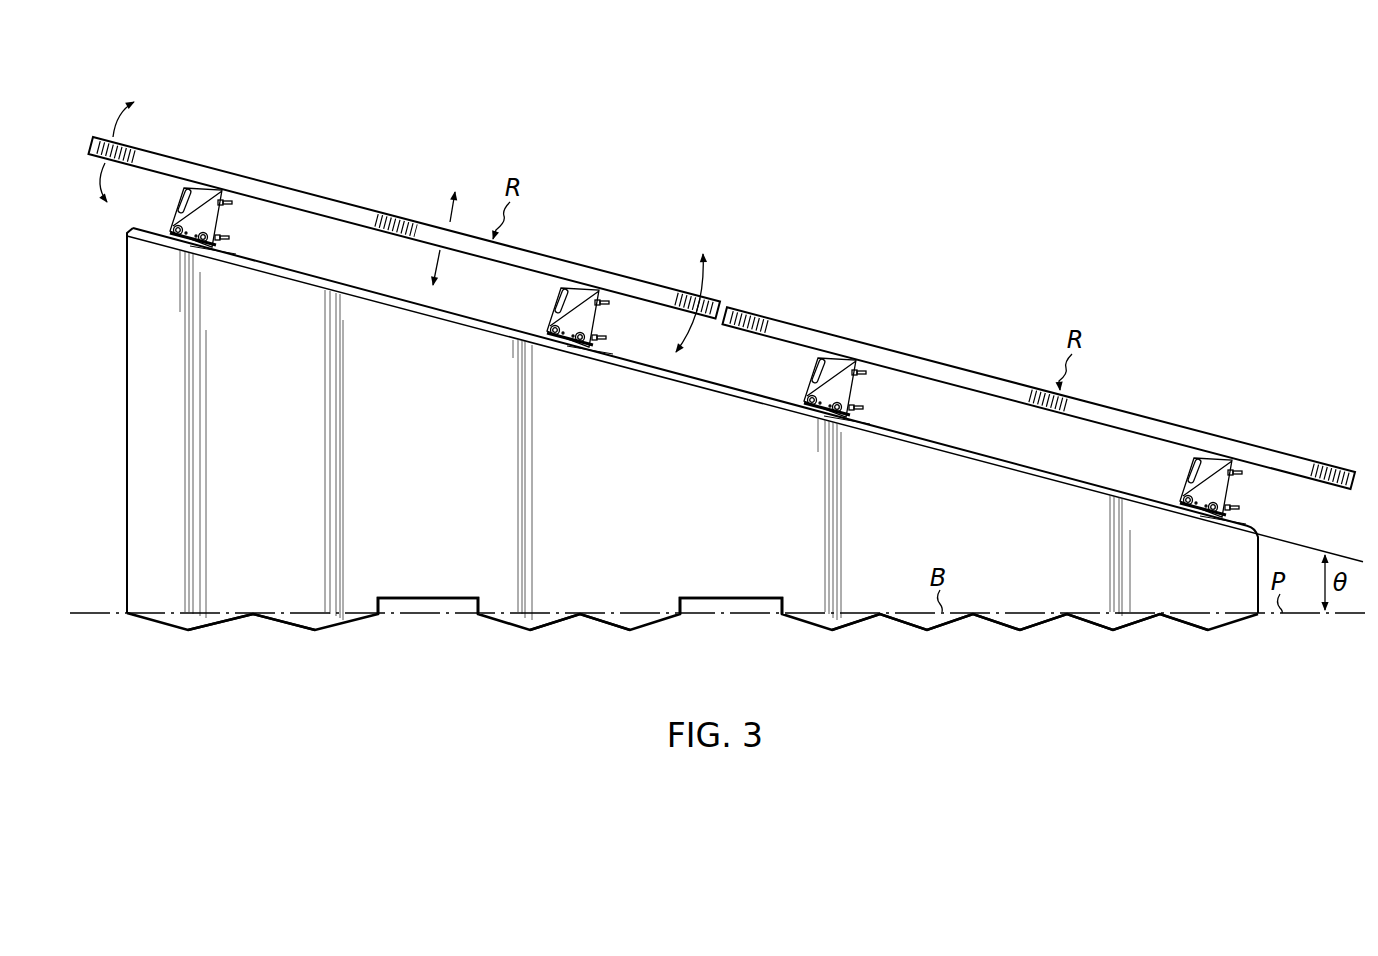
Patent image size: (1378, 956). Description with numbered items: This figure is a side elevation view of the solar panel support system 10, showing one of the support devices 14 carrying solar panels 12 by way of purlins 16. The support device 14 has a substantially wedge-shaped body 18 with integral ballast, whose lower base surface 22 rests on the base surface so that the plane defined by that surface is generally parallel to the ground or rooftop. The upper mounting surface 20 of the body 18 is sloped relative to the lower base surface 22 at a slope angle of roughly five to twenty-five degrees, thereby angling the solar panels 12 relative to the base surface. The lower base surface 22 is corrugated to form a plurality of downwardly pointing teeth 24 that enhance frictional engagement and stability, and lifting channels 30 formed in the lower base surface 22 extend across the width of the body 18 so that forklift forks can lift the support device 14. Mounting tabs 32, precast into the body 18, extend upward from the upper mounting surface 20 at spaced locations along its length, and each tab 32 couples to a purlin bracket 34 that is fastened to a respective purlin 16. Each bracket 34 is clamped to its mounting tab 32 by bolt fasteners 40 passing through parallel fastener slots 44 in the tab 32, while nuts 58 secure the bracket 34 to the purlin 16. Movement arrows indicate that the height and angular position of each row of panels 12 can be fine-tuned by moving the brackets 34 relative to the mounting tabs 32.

The solar panel support system 10 is at (992, 112).
The solar panel 12 is at (332, 198).
The support device 14 is at (124, 387).
The purlin 16 is at (224, 219).
The body 18 is at (150, 473).
The upper mounting surface 20 is at (358, 289).
The lower base surface 22 is at (166, 636).
The pointed teeth 24 is at (315, 630).
The lifting channel 30 is at (429, 605).
The mounting tab 32 is at (186, 190).
The purlin bracket 34 is at (172, 221).
The bolt fastener 40 is at (578, 343).
The fastener slot 44 is at (193, 187).
The nut 58 is at (599, 338).